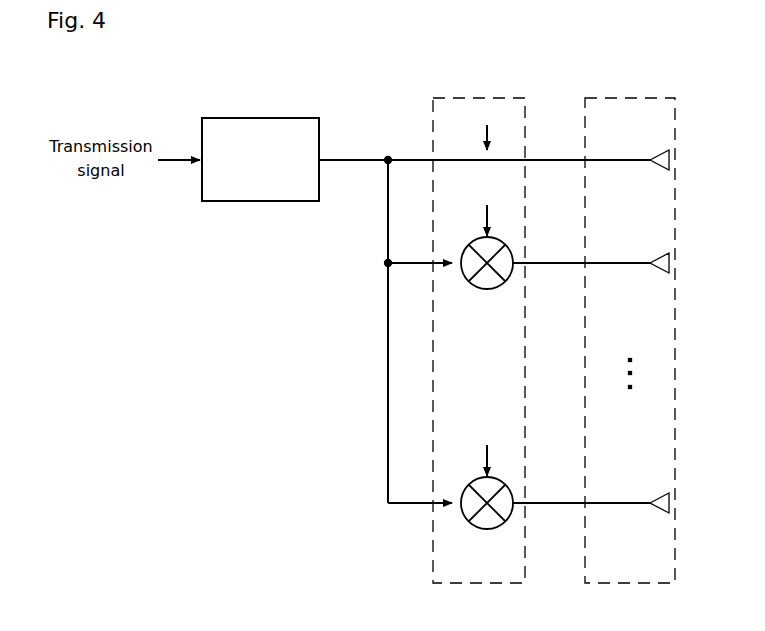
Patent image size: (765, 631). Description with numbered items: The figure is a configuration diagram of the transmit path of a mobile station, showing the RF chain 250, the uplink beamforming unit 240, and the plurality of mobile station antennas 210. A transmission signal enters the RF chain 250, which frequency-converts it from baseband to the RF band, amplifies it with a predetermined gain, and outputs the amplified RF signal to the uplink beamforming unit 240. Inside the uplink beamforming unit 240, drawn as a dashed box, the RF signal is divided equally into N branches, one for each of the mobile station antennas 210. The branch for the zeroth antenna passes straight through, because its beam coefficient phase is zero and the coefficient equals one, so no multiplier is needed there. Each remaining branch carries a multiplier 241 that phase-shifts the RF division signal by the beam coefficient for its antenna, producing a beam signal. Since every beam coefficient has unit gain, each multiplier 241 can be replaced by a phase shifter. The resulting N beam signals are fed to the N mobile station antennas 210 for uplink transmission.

The RF chain 250 is at (285, 118).
The uplink beamforming unit 240 is at (488, 314).
The multiplier 241 is at (486, 290).
The mobile station antennas 210 is at (653, 95).